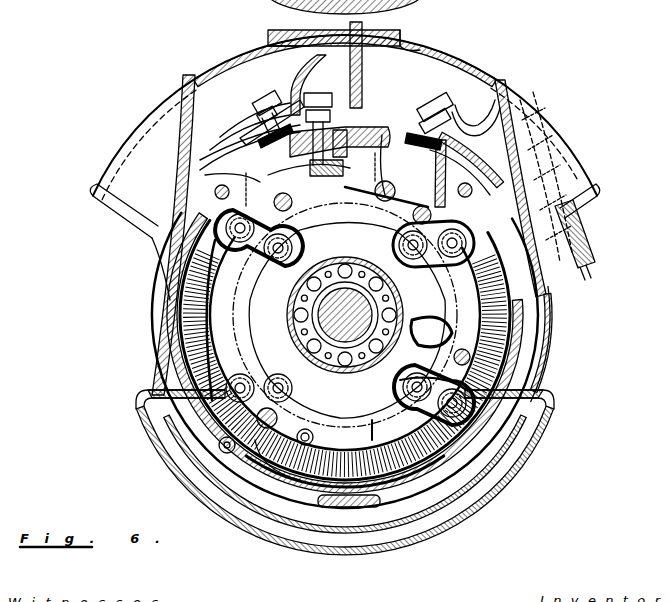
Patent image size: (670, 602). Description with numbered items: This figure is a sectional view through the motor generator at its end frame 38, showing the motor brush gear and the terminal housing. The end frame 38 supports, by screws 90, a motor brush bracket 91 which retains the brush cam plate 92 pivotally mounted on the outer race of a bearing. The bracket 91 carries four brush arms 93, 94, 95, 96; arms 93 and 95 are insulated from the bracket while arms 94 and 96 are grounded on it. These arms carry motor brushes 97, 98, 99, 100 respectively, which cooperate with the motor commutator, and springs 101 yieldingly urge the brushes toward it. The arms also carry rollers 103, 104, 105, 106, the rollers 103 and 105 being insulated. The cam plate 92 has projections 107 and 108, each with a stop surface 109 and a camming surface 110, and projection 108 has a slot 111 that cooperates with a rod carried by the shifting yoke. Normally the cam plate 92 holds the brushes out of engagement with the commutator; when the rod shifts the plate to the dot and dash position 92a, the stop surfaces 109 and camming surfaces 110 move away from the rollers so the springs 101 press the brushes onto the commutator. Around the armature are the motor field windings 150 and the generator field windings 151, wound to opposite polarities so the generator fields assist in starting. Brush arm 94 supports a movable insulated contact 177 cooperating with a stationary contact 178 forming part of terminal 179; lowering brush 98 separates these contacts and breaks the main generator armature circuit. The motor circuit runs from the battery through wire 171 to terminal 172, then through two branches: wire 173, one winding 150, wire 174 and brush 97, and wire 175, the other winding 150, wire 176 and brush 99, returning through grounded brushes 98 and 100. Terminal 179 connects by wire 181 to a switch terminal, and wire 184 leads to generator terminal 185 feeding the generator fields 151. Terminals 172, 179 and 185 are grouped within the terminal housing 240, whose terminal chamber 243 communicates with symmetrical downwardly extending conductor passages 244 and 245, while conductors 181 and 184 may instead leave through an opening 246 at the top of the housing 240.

The end frame 38 is at (262, 428).
The screws 90 is at (260, 470).
The motor brush bracket 91 is at (220, 449).
The brush cam plate 92 is at (300, 343).
The dot and dash line position of brush cam plate 92a is at (260, 340).
The brush arm 93 is at (207, 248).
The brush arm 94 is at (415, 187).
The brush arm 95 is at (467, 390).
The brush arm 96 is at (267, 430).
The motor brush 97 is at (250, 318).
The motor brush 98 is at (372, 183).
The motor brush 99 is at (438, 322).
The motor brush 100 is at (372, 440).
The springs 101 is at (478, 540).
The roller 103 is at (228, 279).
The roller 104 is at (382, 187).
The roller 105 is at (470, 358).
The roller 106 is at (282, 435).
The projection 107 is at (352, 572).
The projection 108 is at (412, 350).
The stop surface 109 is at (240, 300).
The camming surface 110 is at (215, 270).
The slot 111 is at (480, 297).
The motor field windings 150 is at (265, 183).
The generator field windings 151 is at (205, 363).
The wire 171 is at (588, 238).
The terminal 172 is at (435, 100).
The wire 173 is at (467, 167).
The wire 174 is at (245, 198).
The wire 175 is at (505, 467).
The wire 176 is at (498, 488).
The movable contact 177 is at (262, 162).
The stationary contact 178 is at (258, 140).
The terminal 179 is at (320, 92).
The wire 181 is at (363, 58).
The wire 184 is at (308, 70).
The generator terminal 185 is at (262, 98).
The terminal housing 240 is at (440, 55).
The terminal chamber 243 is at (490, 84).
The conductor passage 244 is at (116, 200).
The conductor passage 245 is at (592, 204).
The opening 246 is at (375, 22).